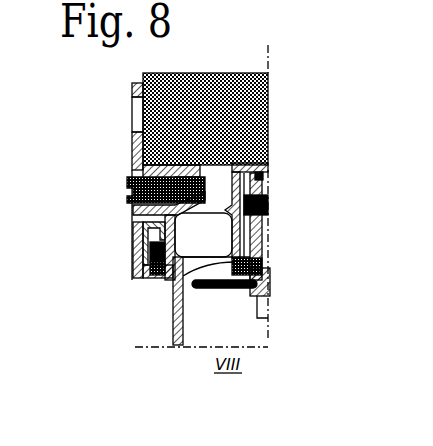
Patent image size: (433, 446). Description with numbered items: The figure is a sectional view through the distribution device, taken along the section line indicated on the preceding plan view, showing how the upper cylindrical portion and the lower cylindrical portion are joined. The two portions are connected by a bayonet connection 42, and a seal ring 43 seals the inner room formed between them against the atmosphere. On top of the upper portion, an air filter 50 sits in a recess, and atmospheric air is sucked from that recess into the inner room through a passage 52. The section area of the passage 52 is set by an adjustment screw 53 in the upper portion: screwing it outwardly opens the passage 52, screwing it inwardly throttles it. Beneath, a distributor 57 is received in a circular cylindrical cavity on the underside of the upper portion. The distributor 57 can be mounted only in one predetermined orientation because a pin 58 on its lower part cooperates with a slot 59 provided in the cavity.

The air filter 50 is at (263, 110).
The passage 52 is at (258, 185).
The adjustment screw 53 is at (130, 183).
The distributor 57 is at (267, 202).
The bayonet connection 42 is at (132, 247).
The seal ring 43 is at (168, 278).
The pin 58 is at (173, 275).
The slot 59 is at (235, 243).